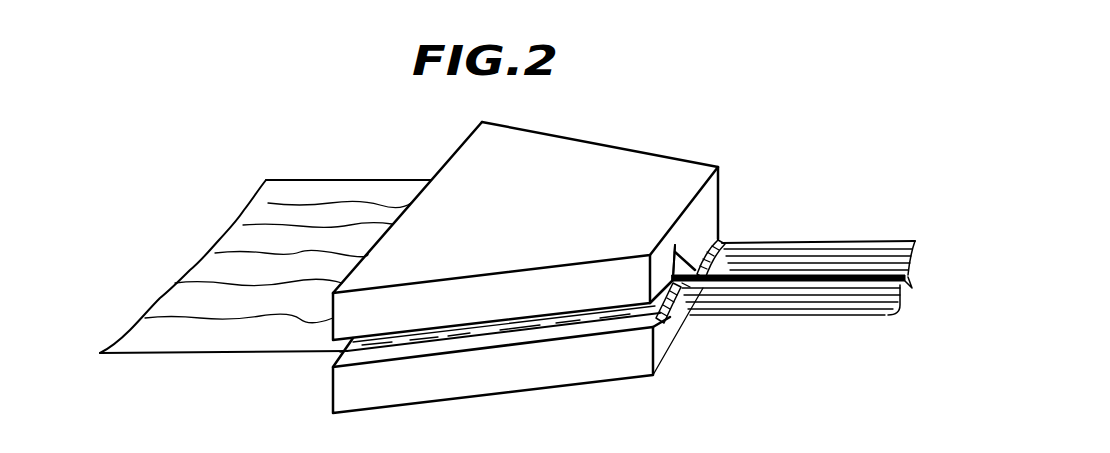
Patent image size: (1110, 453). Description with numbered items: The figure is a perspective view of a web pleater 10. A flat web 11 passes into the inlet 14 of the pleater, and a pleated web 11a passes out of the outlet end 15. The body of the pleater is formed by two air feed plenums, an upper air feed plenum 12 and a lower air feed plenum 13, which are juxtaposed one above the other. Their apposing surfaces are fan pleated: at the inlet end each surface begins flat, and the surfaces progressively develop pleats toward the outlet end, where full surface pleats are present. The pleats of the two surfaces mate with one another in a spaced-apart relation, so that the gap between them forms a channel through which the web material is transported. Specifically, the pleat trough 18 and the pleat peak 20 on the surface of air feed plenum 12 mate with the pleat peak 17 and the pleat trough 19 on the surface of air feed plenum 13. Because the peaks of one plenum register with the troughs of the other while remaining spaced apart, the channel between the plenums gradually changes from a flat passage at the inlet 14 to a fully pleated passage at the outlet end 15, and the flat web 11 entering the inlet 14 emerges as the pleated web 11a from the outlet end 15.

The web pleater 10 is at (525, 253).
The flat web 11 is at (301, 258).
The pleated web 11a is at (806, 257).
The air feed plenum 12 is at (557, 214).
The air feed plenum 13 is at (507, 380).
The inlet 14 is at (330, 358).
The outlet end 15 is at (718, 228).
The pleat peak 17 is at (681, 288).
The pleat trough 18 is at (676, 247).
The pleat trough 19 is at (700, 290).
The pleat peak 20 is at (693, 266).